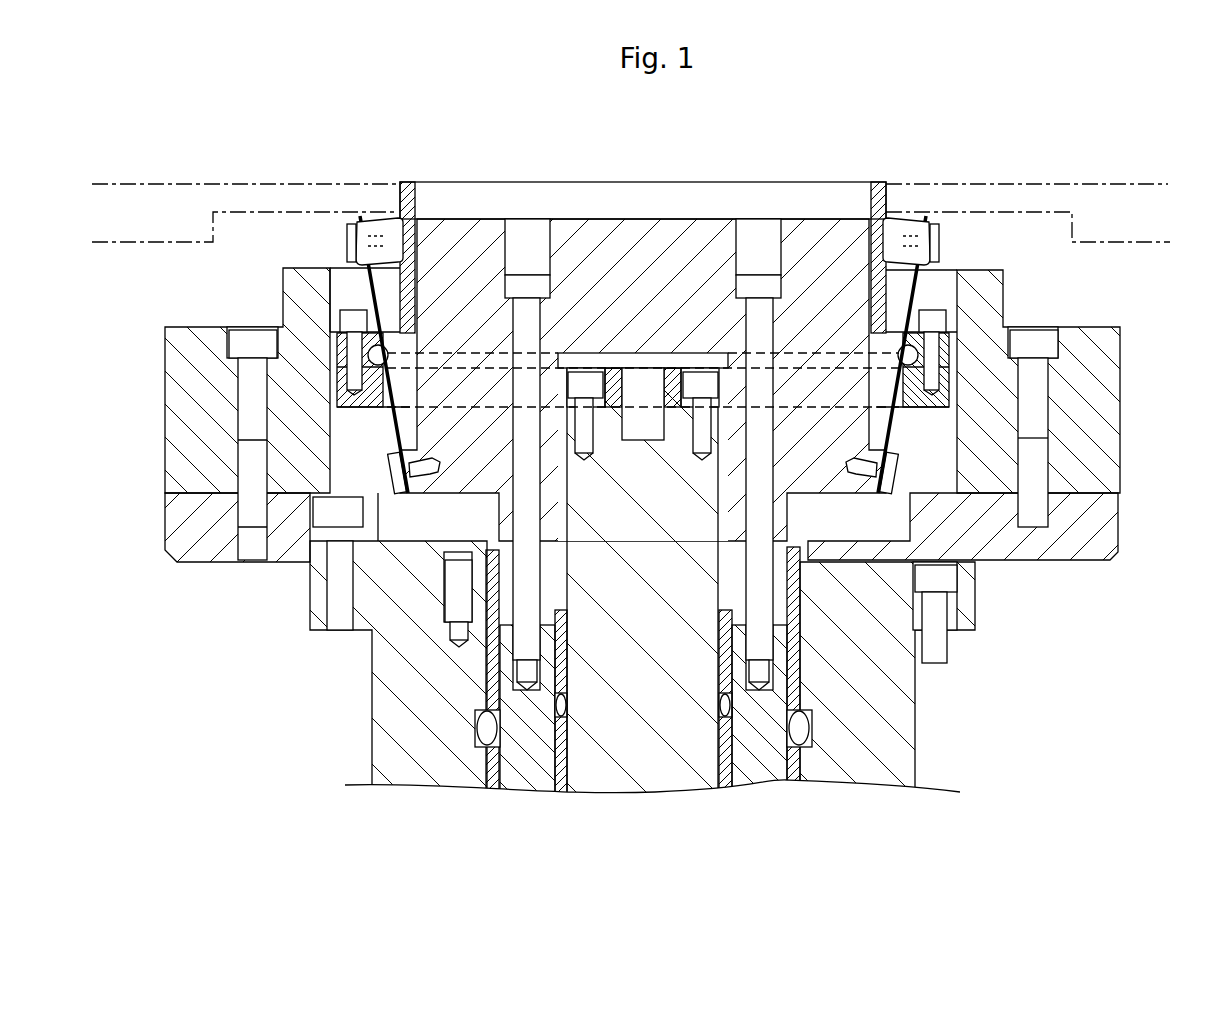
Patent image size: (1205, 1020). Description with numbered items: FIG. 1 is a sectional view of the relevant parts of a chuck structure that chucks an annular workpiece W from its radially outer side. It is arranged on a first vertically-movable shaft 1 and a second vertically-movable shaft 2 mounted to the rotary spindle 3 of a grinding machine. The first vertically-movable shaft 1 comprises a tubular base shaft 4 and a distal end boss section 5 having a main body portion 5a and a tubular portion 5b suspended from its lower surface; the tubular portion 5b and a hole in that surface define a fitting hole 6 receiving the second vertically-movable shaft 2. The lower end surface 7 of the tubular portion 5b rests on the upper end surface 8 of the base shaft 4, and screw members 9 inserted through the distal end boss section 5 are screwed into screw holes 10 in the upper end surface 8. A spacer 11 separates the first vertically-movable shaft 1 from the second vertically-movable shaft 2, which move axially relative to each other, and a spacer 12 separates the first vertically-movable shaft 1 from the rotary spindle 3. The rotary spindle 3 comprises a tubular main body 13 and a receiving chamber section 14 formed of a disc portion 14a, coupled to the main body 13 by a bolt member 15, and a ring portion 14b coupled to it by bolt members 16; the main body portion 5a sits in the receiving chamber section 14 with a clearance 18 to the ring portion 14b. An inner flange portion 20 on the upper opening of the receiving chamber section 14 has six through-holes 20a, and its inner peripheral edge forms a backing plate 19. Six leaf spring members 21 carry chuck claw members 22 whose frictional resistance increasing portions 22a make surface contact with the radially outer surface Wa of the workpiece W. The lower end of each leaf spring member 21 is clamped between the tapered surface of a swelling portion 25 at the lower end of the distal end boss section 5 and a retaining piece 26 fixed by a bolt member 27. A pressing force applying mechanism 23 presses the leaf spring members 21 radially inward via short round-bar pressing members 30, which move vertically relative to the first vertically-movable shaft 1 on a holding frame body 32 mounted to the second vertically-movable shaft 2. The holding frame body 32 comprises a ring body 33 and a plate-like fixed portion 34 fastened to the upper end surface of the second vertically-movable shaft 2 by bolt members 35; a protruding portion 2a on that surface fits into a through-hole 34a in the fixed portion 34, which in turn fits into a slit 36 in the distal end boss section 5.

The first vertically-movable shaft 1 is at (526, 760).
The second vertically-movable shaft 2 is at (630, 748).
The protruding portion 2a is at (657, 366).
The rotary spindle 3 is at (1008, 675).
The base shaft 4 is at (757, 760).
The distal end boss section 5 is at (642, 216).
The main body portion 5a is at (460, 228).
The tubular portion 5b is at (483, 533).
The fitting hole 6 is at (720, 533).
The lower end surface 7 is at (487, 676).
The upper end surface 8 is at (790, 618).
The screw members 9 is at (524, 305).
The screw holes 10 is at (777, 677).
The spacer 11 is at (723, 772).
The spacer 12 is at (492, 770).
The tubular main body 13 is at (885, 740).
The receiving chamber section 14 is at (1098, 325).
The disc portion 14a is at (194, 548).
The ring portion 14b is at (190, 447).
The bolt member 15 is at (333, 580).
The bolt members 16 is at (240, 392).
The clearance 18 is at (940, 437).
The backing plate 19 is at (868, 222).
The inner flange portion 20 is at (343, 266).
The through-holes 20a is at (336, 300).
The leaf spring members 21 is at (362, 286).
The chuck claw members 22 is at (372, 223).
The frictional resistance increasing portion 22a is at (400, 232).
The pressing force applying mechanism 23 is at (333, 318).
The swelling portion 25 is at (419, 488).
The retaining piece 26 is at (397, 492).
The bolt member 27 is at (390, 473).
The pressing members 30 is at (384, 356).
The holding frame body 32 is at (355, 410).
The ring body 33 is at (342, 393).
The fixed portion 34 is at (617, 377).
The through-hole 34a is at (613, 390).
The bolt members 35 is at (584, 378).
The slit 36 is at (828, 358).
The workpiece W is at (876, 180).
The radially outer surface Wa is at (887, 200).